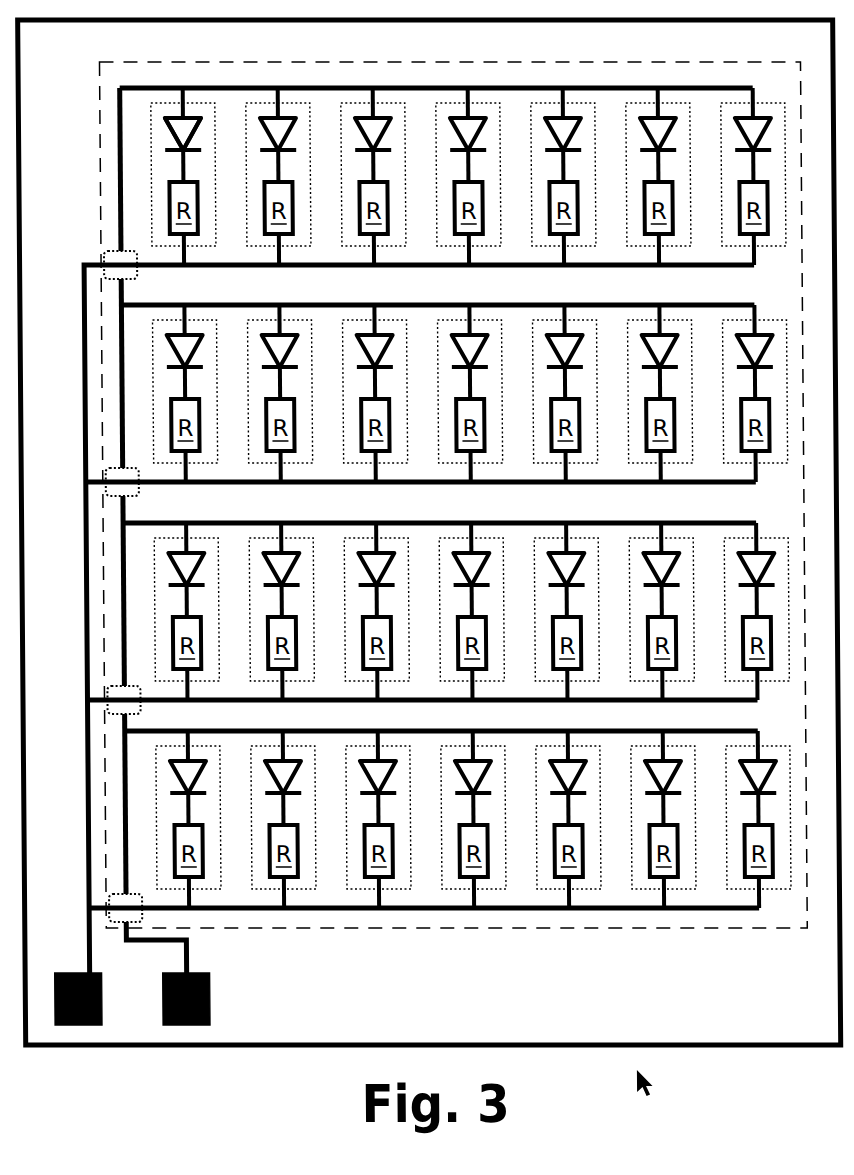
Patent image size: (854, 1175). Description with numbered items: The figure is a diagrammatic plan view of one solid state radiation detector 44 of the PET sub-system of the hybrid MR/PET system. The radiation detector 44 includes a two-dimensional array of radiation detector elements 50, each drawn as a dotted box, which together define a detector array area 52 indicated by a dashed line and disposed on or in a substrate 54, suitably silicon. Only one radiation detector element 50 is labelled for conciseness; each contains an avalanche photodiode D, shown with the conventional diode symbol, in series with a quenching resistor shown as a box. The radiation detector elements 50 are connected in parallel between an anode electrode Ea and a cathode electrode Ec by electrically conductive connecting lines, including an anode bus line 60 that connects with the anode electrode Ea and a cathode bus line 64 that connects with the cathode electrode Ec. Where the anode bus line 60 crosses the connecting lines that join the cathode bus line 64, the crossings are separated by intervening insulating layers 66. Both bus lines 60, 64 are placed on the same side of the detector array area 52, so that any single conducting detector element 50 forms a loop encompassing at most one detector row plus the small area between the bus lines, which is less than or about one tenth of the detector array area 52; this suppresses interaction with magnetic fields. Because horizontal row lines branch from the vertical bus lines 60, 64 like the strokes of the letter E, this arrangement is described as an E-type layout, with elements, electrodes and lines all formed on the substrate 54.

The avalanche photodiode D is at (167, 133).
The radiation detector element 50 is at (152, 177).
The insulating layer 66 is at (113, 497).
The cathode bus line 64 is at (77, 747).
The anode bus line 60 is at (116, 788).
The cathode electrode Ec is at (94, 988).
The anode electrode Ea is at (202, 988).
The detector array area 52 is at (443, 928).
The substrate 54 is at (706, 1045).
The solid state radiation detector 44 is at (653, 1099).